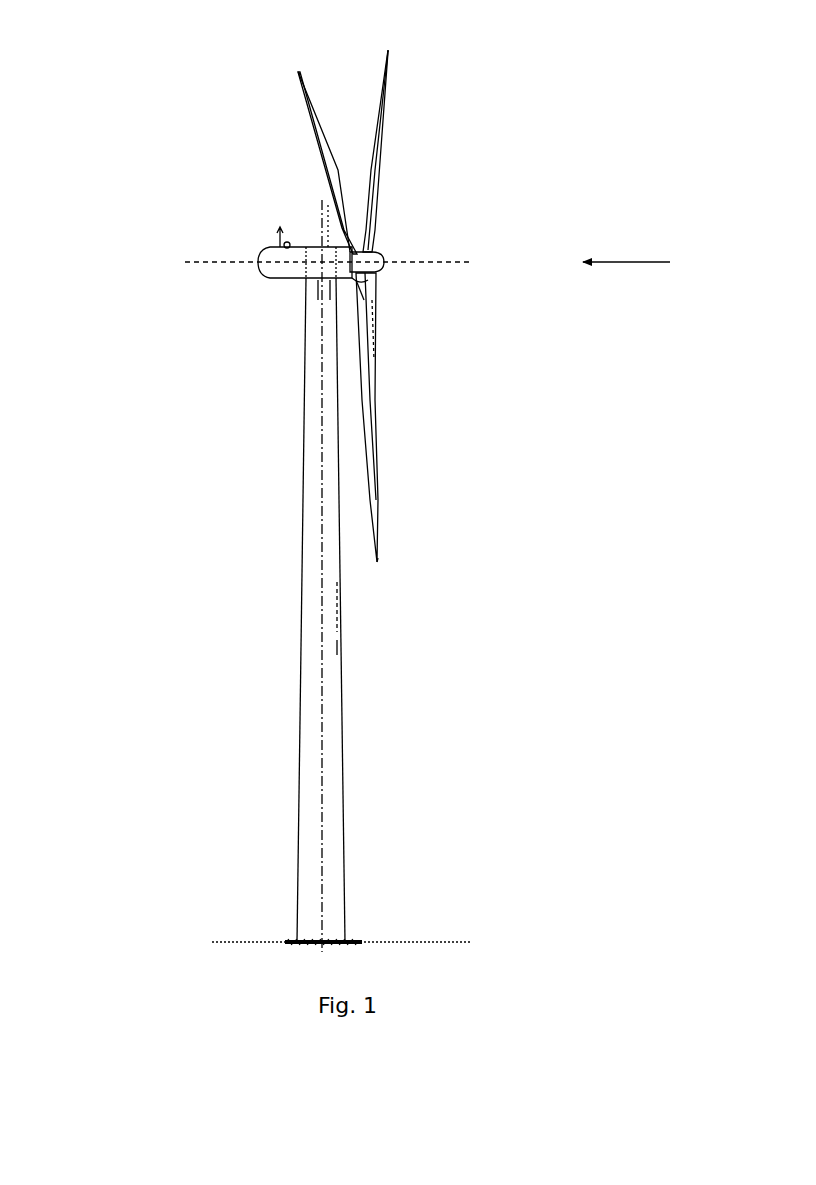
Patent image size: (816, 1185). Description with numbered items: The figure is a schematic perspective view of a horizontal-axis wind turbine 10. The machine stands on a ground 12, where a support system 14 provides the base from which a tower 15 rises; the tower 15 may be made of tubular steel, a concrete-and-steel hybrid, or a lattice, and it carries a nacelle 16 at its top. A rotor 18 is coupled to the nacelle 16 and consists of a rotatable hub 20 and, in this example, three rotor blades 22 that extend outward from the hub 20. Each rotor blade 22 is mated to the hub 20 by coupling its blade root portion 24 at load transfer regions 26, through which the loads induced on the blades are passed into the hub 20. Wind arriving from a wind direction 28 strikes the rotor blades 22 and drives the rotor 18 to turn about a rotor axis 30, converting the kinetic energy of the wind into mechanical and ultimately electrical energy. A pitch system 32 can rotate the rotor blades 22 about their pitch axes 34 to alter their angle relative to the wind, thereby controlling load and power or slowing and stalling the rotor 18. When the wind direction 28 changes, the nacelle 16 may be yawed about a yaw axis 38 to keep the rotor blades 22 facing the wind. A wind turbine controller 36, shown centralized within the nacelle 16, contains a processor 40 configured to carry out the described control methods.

The wind turbine 10 is at (113, 78).
The ground 12 is at (231, 940).
The support system 14 is at (290, 940).
The tower 15 is at (302, 590).
The nacelle 16 is at (288, 280).
The rotor 18 is at (395, 175).
The rotatable hub 20 is at (385, 255).
The rotor blade 22 is at (312, 133).
The blade root portion 24 is at (372, 355).
The load transfer regions 26 is at (364, 280).
The wind direction 28 is at (645, 262).
The rotor axis 30 is at (443, 265).
The pitch system 32 is at (366, 300).
The pitch axes 34 is at (297, 72).
The wind turbine controller 36 is at (330, 297).
The yaw axis 38 is at (340, 648).
The processor 40 is at (328, 212).